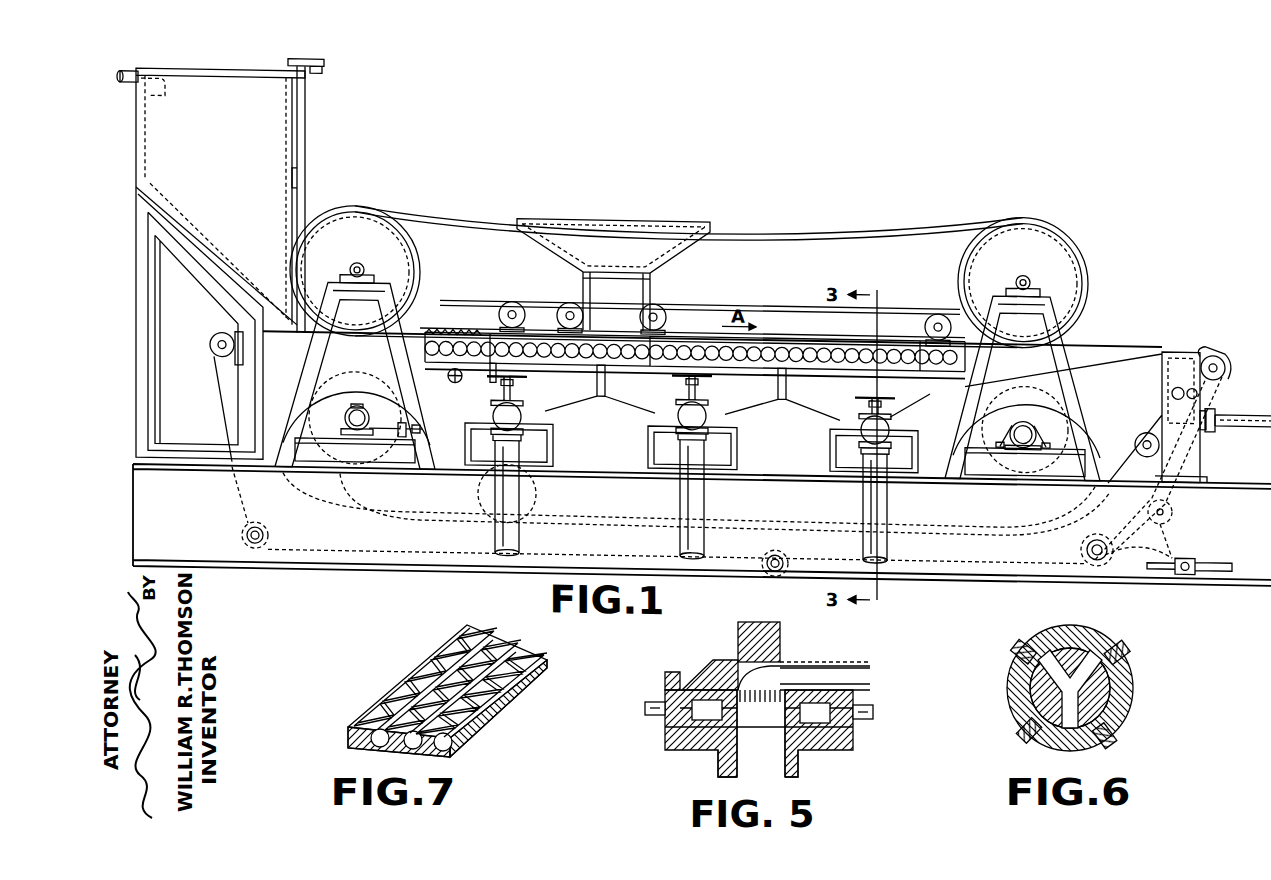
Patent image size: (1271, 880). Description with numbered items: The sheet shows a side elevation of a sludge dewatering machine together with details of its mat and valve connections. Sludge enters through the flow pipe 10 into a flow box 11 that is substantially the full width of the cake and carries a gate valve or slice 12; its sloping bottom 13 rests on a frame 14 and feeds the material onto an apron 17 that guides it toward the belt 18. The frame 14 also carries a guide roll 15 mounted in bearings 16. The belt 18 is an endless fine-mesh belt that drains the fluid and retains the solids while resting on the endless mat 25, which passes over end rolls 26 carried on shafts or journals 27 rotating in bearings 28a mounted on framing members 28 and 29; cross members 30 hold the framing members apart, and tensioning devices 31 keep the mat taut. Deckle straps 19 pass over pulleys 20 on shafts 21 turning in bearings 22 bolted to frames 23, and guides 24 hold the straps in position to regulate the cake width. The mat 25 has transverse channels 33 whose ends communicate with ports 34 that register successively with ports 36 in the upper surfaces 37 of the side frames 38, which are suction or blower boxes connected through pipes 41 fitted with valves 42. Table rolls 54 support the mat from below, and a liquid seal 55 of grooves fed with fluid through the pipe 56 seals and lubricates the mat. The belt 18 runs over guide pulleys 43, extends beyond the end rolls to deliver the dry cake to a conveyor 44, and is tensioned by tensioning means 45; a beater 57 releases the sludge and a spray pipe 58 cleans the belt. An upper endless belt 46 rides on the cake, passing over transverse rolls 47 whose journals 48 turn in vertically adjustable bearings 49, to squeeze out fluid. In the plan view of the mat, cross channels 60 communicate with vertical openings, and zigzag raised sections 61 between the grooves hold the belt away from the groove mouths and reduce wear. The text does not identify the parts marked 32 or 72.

In FIG. 1, the flow pipe 10 is at (128, 69).
In FIG. 1, the flow box 11 is at (220, 196).
In FIG. 1, the gate valve or slice 12 is at (306, 140).
In FIG. 1, the bottom 13 is at (192, 200).
In FIG. 1, the frame 14 is at (160, 344).
In FIG. 1, the guide roll 15 is at (210, 344).
In FIG. 1, the bearings 16 is at (216, 359).
In FIG. 1, the apron 17 is at (300, 330).
In FIG. 1, the belt 18 is at (208, 400).
In FIG. 1, the deckle straps 19 is at (764, 215).
In FIG. 5, the deckle straps 19 is at (768, 622).
In FIG. 1, the pulleys 20 is at (421, 268).
In FIG. 1, the shafts 21 is at (349, 264).
In FIG. 1, the bearings 22 is at (365, 264).
In FIG. 1, the frames 23 is at (318, 354).
In FIG. 1, the guides 24 is at (613, 275).
In FIG. 1, the mat 25 is at (392, 515).
In FIG. 7, the mat 25 is at (541, 673).
In FIG. 1, the end rolls 26 is at (691, 411).
In FIG. 1, the shafts or journals 27 is at (344, 412).
In FIG. 1, the framing members 28 is at (690, 457).
In FIG. 1, the bearings 28a is at (372, 415).
In FIG. 1, the framing members 29 is at (702, 475).
In FIG. 1, the cross members 30 is at (465, 442).
In FIG. 1, the tensioning devices 31 is at (423, 424).
In FIG. 5, the guide body 32 is at (702, 672).
In FIG. 1, the channels 33 is at (440, 323).
In FIG. 5, the channels 33 is at (825, 677).
In FIG. 5, the ports 34 is at (804, 679).
In FIG. 5, the ports 36 is at (761, 733).
In FIG. 5, the upper surfaces 37 is at (655, 700).
In FIG. 1, the side frames 38 is at (661, 381).
In FIG. 5, the side frames 38 is at (718, 762).
In FIG. 1, the pipes 41 is at (522, 496).
In FIG. 1, the valves 42 is at (524, 410).
In FIG. 6, the valves 42 is at (1008, 701).
In FIG. 1, the guide pulleys 43 is at (218, 331).
In FIG. 1, the conveyor 44 is at (1240, 395).
In FIG. 1, the tensioning means 45 is at (1190, 538).
In FIG. 1, the endless belt 46 is at (771, 295).
In FIG. 1, the rolls 47 is at (922, 304).
In FIG. 1, the journals 48 is at (938, 300).
In FIG. 1, the vertically adjustable bearings 49 is at (513, 296).
In FIG. 1, the table rolls 54 is at (776, 385).
In FIG. 5, the liquid seal 55 is at (855, 697).
In FIG. 5, the pipe 56 is at (867, 719).
In FIG. 1, the beater 57 is at (1222, 386).
In FIG. 1, the spray pipe 58 is at (1172, 376).
In FIG. 7, the cross channels 60 is at (350, 735).
In FIG. 7, the raised sections 61 is at (422, 690).
In FIG. 1, the bolt 72 is at (462, 376).